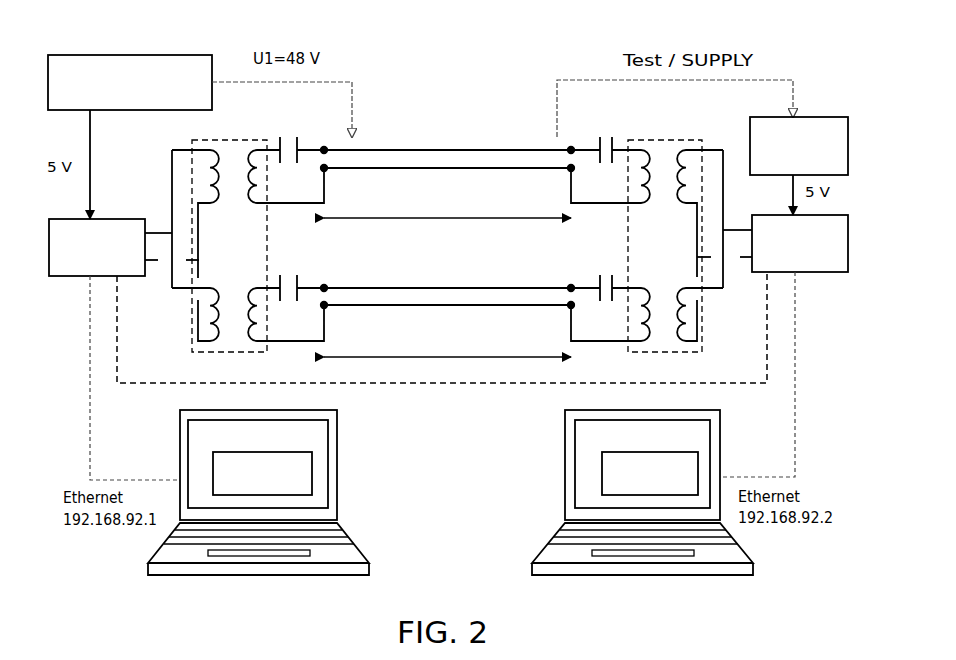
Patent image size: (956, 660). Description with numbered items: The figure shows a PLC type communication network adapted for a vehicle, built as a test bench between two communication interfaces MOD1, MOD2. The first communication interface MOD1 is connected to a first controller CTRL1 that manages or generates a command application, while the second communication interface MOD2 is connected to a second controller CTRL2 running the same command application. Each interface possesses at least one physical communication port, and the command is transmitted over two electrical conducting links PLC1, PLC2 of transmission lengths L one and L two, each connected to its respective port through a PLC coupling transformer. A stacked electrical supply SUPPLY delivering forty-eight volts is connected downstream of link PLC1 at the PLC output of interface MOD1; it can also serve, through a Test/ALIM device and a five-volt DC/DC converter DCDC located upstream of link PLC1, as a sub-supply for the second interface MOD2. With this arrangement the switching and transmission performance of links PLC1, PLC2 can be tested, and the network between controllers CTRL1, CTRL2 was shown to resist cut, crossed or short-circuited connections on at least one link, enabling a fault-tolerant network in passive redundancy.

The electrical supply SUPPLY is at (130, 82).
The first communication interface MOD1 is at (97, 247).
The second communication interface MOD2 is at (800, 243).
The DC/DC converter DCDC is at (799, 146).
The first electrical conducting link PLC1 is at (448, 168).
The second electrical conducting link PLC2 is at (448, 307).
The first controller CTRL1 is at (258, 492).
The second controller CTRL2 is at (642, 492).